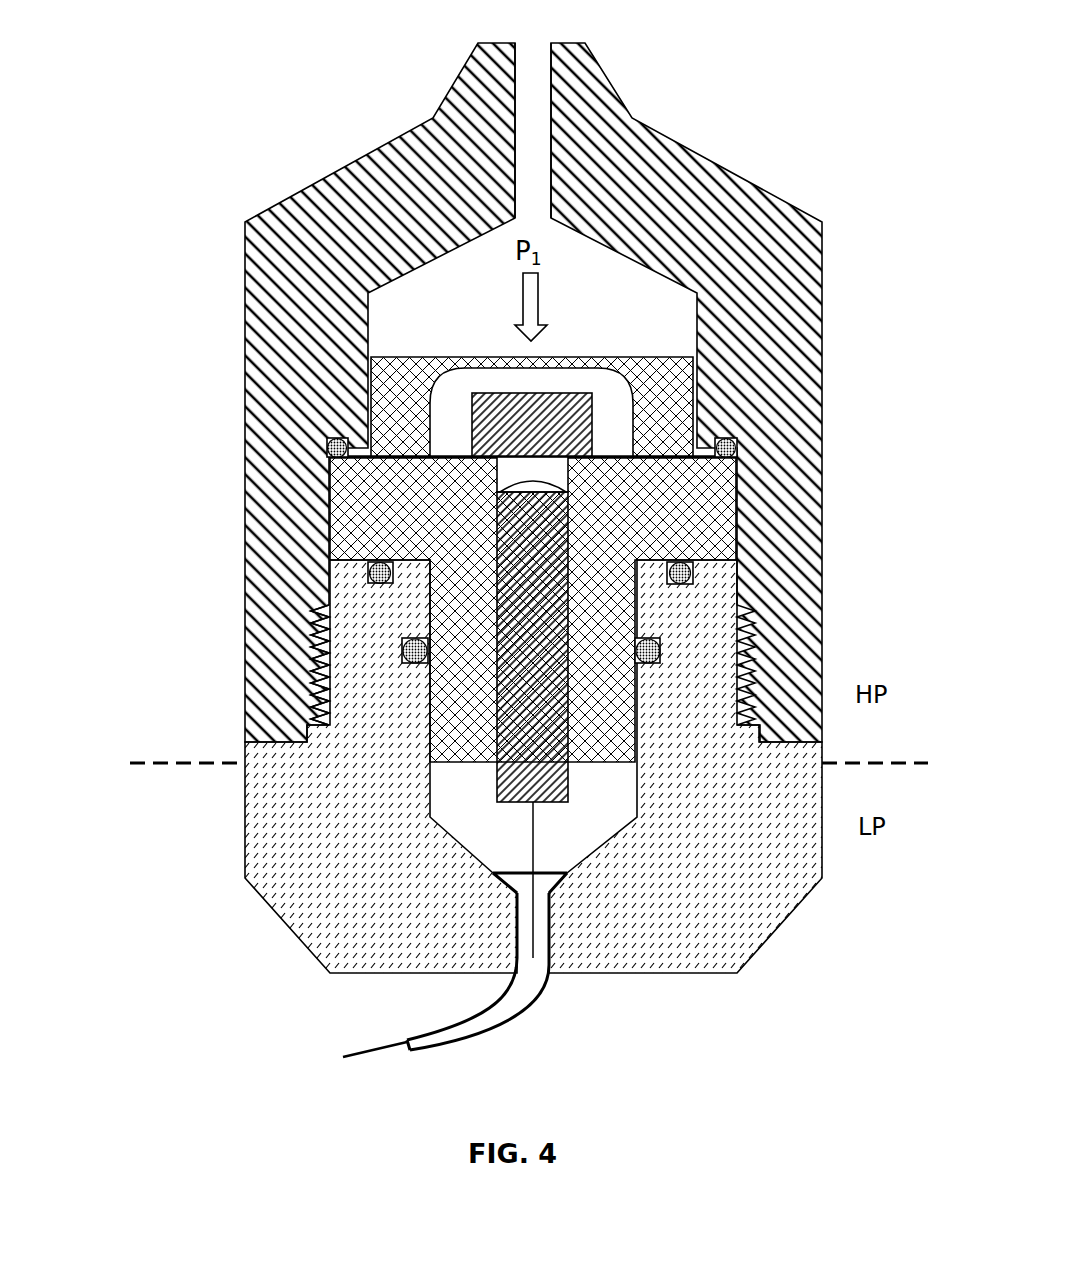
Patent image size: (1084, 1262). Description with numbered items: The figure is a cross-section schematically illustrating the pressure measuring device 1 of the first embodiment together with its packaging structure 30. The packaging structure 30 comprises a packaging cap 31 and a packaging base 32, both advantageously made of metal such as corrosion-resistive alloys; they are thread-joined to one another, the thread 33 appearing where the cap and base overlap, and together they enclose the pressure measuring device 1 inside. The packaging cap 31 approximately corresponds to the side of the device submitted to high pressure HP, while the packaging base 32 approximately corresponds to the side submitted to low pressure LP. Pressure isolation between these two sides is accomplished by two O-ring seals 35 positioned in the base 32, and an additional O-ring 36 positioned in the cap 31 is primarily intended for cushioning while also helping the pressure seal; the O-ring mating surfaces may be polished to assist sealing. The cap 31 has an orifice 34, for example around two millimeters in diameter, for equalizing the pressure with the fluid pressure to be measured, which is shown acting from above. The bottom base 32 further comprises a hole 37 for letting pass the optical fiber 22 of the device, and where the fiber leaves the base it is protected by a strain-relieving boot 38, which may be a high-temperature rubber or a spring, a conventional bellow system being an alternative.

The pressure measuring device 1 is at (438, 345).
The optical fiber 22 is at (352, 1052).
The packaging structure 30 is at (452, 508).
The packaging cap 31 is at (256, 260).
The packaging base 32 is at (257, 812).
The thread 33 is at (330, 663).
The orifice 34 is at (537, 85).
The O-ring seals 35 is at (660, 651).
The additional O-ring 36 is at (740, 448).
The hole 37 is at (550, 927).
The strain-relieving boot 38 is at (527, 1005).